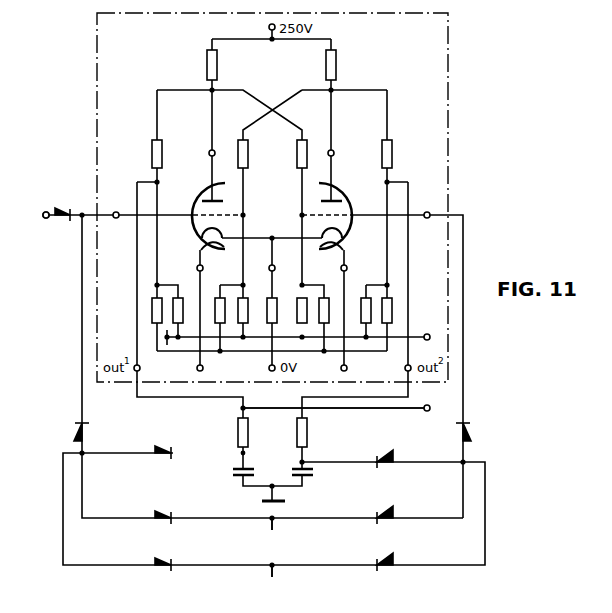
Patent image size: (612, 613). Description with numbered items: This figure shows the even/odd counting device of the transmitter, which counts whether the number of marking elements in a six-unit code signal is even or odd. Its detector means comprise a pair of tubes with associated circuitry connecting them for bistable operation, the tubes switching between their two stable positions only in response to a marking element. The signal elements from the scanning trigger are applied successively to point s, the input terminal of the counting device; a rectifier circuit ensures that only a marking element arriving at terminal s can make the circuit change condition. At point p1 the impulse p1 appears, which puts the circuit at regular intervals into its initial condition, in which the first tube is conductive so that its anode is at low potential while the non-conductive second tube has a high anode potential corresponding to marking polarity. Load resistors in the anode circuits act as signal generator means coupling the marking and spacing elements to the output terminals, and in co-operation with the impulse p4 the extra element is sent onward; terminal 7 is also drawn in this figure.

The terminal 7 is at (337, 418).
The impulse P1 p1 is at (38, 217).
The impulse P4 p4 is at (275, 537).
The input terminal s is at (271, 582).